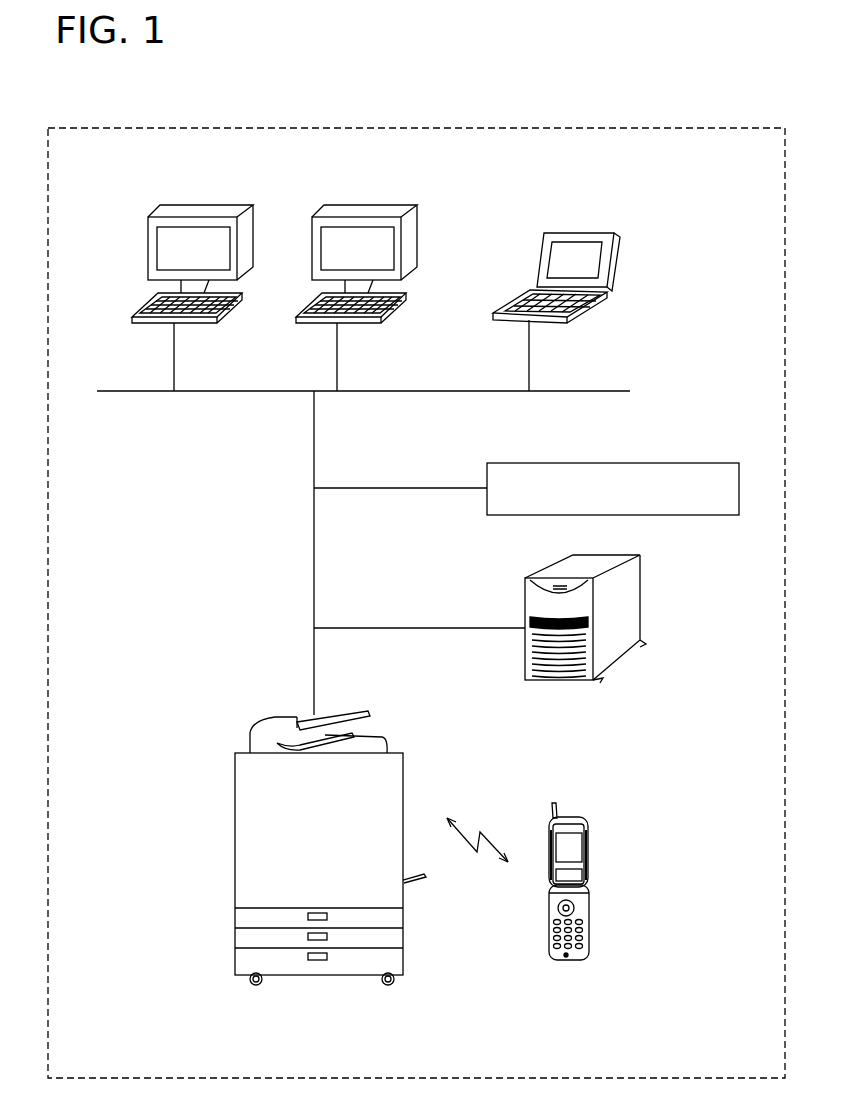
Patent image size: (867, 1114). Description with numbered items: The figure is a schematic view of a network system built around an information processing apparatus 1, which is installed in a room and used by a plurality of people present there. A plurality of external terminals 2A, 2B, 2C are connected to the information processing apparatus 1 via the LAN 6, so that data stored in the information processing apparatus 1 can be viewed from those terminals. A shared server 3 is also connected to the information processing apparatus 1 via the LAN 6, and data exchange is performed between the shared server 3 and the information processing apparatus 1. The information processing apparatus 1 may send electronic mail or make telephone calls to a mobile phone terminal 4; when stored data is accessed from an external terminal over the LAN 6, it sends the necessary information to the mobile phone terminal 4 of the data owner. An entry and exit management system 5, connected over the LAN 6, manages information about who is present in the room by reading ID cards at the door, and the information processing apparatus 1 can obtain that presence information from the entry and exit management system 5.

The information processing apparatus 1 is at (404, 773).
The external terminal 2A is at (205, 205).
The external terminal 2B is at (368, 205).
The external terminal 2C is at (580, 232).
The shared server 3 is at (641, 590).
The mobile phone terminal 4 is at (589, 860).
The entry and exit management system 5 is at (615, 462).
The LAN 6 is at (313, 552).